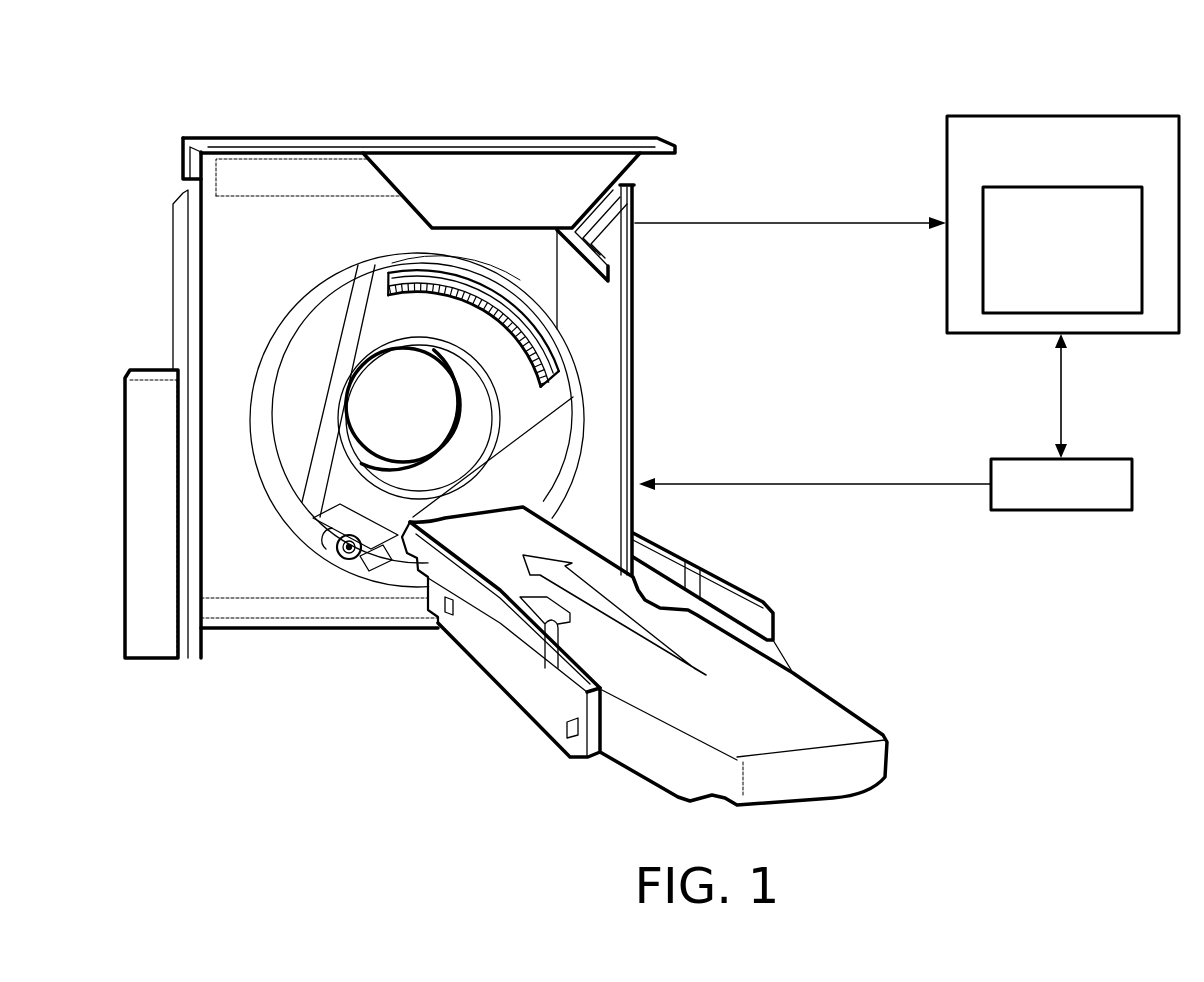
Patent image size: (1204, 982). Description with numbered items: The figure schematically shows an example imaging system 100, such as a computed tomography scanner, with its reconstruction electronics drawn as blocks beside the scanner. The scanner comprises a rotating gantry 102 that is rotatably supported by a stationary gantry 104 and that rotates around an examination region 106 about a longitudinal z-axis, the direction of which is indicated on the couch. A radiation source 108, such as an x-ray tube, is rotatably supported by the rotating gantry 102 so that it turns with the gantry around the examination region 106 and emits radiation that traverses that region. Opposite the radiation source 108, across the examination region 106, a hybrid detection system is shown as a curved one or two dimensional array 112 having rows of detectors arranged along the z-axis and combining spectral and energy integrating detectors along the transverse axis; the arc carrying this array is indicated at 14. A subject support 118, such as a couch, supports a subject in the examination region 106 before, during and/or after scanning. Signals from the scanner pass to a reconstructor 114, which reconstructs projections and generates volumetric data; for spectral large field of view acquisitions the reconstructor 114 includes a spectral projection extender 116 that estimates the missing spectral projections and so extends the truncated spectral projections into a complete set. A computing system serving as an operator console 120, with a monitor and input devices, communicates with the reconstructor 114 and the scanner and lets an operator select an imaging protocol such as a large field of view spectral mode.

The imaging system 100 is at (205, 100).
The rotating gantry frame arc 14 is at (394, 251).
The rotating gantry 102 is at (363, 310).
The stationary gantry 104 is at (188, 272).
The examination region 106 is at (381, 420).
The radiation source 108 is at (340, 557).
The one or two dimensional array 112 is at (488, 297).
The reconstructor 114 is at (1064, 115).
The spectral projection extender 116 is at (1115, 314).
The subject support 118 is at (820, 703).
The operator console 120 is at (1061, 518).